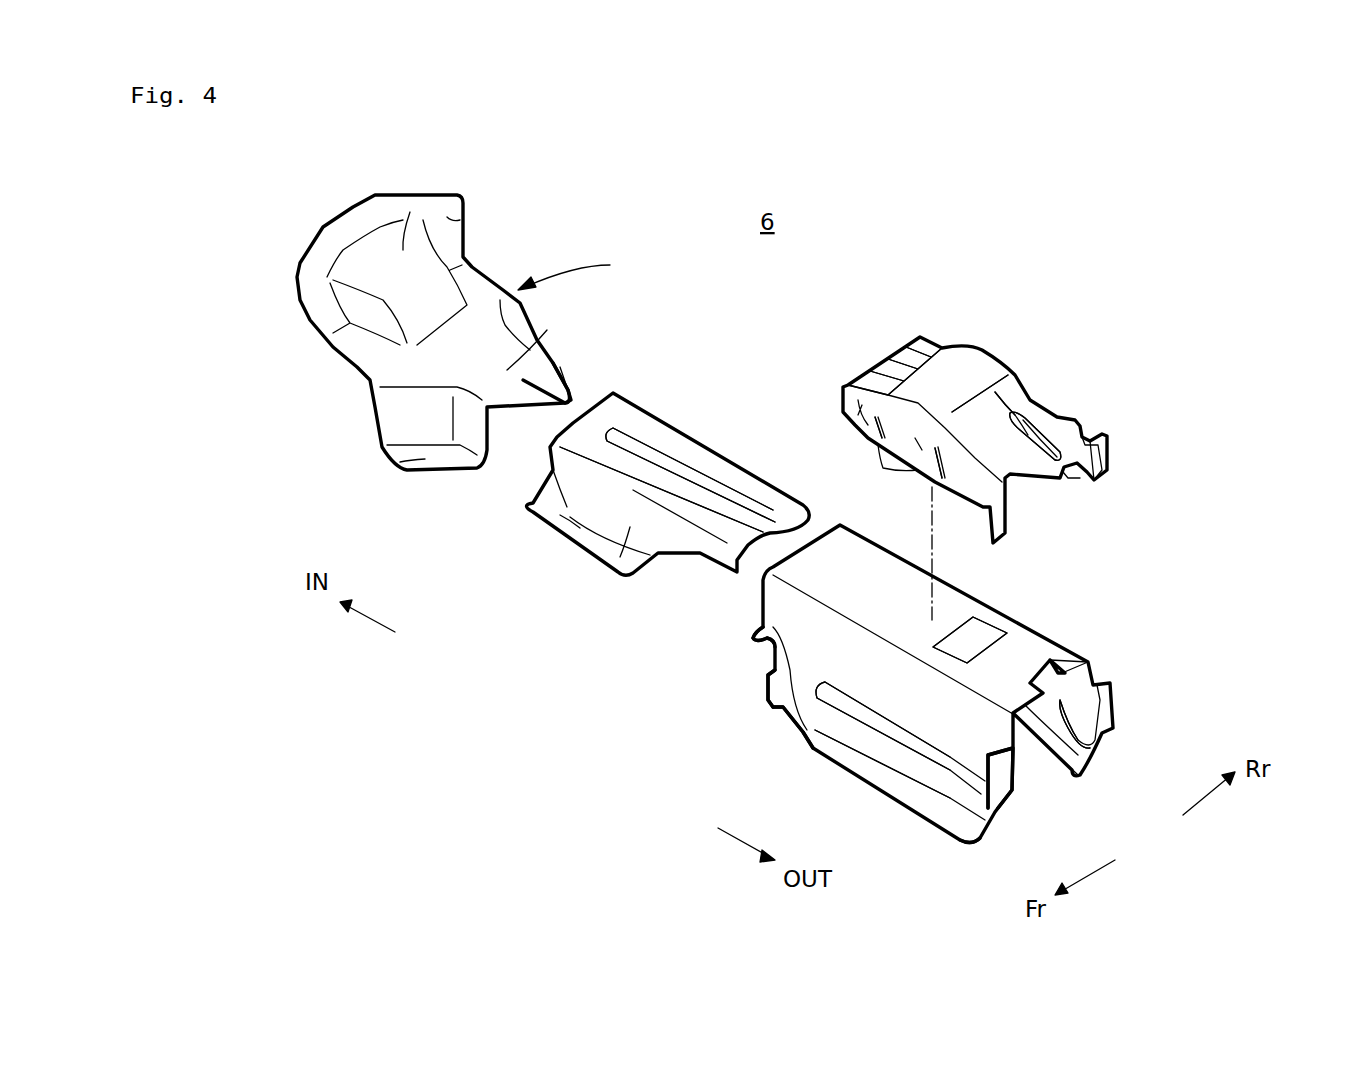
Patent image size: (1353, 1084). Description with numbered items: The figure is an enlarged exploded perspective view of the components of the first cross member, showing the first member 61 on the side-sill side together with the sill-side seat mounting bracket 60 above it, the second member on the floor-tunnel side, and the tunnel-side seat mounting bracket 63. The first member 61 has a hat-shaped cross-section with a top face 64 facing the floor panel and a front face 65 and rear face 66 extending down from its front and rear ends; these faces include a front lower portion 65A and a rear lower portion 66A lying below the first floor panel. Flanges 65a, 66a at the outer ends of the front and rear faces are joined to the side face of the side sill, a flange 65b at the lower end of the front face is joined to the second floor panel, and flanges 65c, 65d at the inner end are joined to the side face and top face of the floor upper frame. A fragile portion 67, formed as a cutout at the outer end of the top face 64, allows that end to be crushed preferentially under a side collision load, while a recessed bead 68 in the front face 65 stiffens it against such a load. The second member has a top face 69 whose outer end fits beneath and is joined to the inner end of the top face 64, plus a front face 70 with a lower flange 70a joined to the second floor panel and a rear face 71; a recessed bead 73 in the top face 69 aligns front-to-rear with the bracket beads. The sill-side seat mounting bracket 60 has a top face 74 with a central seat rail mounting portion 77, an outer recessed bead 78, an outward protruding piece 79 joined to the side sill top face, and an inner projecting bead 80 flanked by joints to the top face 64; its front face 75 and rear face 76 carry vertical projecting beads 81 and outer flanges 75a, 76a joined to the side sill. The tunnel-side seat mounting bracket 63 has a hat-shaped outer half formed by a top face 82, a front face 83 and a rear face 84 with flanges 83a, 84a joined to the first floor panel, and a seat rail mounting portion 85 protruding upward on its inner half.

The sill-side seat mounting bracket 60 is at (1008, 348).
The first member 61 is at (1028, 622).
The tunnel-side seat mounting bracket 63 is at (580, 269).
The top face 64 is at (953, 608).
The front face 65 is at (893, 715).
The front lower portion 65A is at (823, 732).
The flange 65a is at (1005, 790).
The flange 65b is at (950, 825).
The flange 65c is at (768, 700).
The flange 65d is at (752, 642).
The rear face 66 is at (1068, 732).
The rear lower portion 66A is at (1083, 758).
The flange 66a is at (1115, 712).
The fragile portion 67 is at (1068, 670).
The recessed bead 68 is at (940, 767).
The top face 69 is at (655, 432).
The front face 70 is at (630, 535).
The flange 70a is at (558, 532).
The rear face 71 is at (808, 515).
The recessed bead 73 is at (715, 480).
The top face 74 is at (1003, 398).
The front face 75 is at (968, 498).
The flange 75a is at (1000, 528).
The rear face 76 is at (1085, 475).
The flange 76a is at (1110, 450).
The seat rail mounting portion 77 is at (975, 363).
The recessed bead 78 is at (1040, 448).
The protruding piece 79 is at (1063, 482).
The projecting bead 80 is at (890, 362).
The projecting bead 81 is at (870, 470).
The top face 82 is at (352, 225).
The front face 83 is at (468, 428).
The flange 83a is at (398, 465).
The rear face 84 is at (568, 370).
The flange 84a is at (575, 398).
The seat rail mounting portion 85 is at (410, 212).